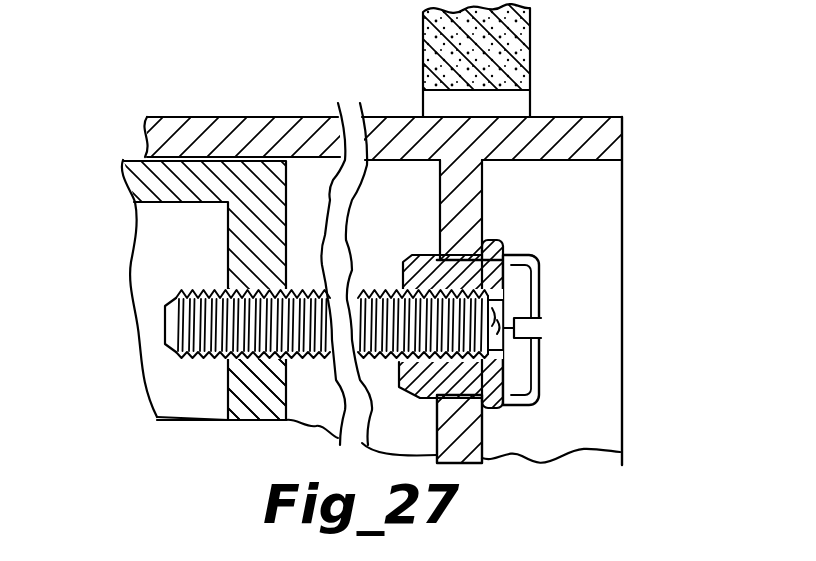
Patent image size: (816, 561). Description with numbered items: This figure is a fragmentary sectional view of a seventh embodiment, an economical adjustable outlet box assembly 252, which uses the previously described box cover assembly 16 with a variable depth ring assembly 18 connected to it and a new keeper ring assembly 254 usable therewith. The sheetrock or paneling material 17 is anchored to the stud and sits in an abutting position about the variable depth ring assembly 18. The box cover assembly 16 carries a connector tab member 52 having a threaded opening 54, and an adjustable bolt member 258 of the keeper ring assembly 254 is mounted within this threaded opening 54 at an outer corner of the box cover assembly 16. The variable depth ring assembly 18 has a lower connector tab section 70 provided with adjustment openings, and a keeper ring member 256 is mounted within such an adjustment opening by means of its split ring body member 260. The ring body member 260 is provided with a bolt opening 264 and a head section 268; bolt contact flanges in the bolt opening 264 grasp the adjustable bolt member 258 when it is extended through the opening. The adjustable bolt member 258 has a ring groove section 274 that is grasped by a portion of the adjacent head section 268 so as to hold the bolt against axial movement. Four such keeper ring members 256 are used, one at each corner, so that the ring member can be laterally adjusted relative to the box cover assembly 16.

The box cover assembly 16 is at (163, 222).
The sheetrock or paneling material 17 is at (432, 40).
The variable depth ring assembly 18 is at (622, 145).
The connector tab member 52 is at (243, 414).
The threaded opening 54 is at (270, 328).
The lower connector tab section 70 is at (480, 203).
The economical adjustable outlet box assembly 252 is at (735, 393).
The keeper ring assembly 254 is at (550, 358).
The keeper ring member 256 is at (500, 424).
The adjustable bolt member 258 is at (374, 290).
The ring body member 260 is at (481, 462).
The bolt opening 264 is at (400, 364).
The head section 268 is at (540, 274).
The ring groove section 274 is at (522, 318).